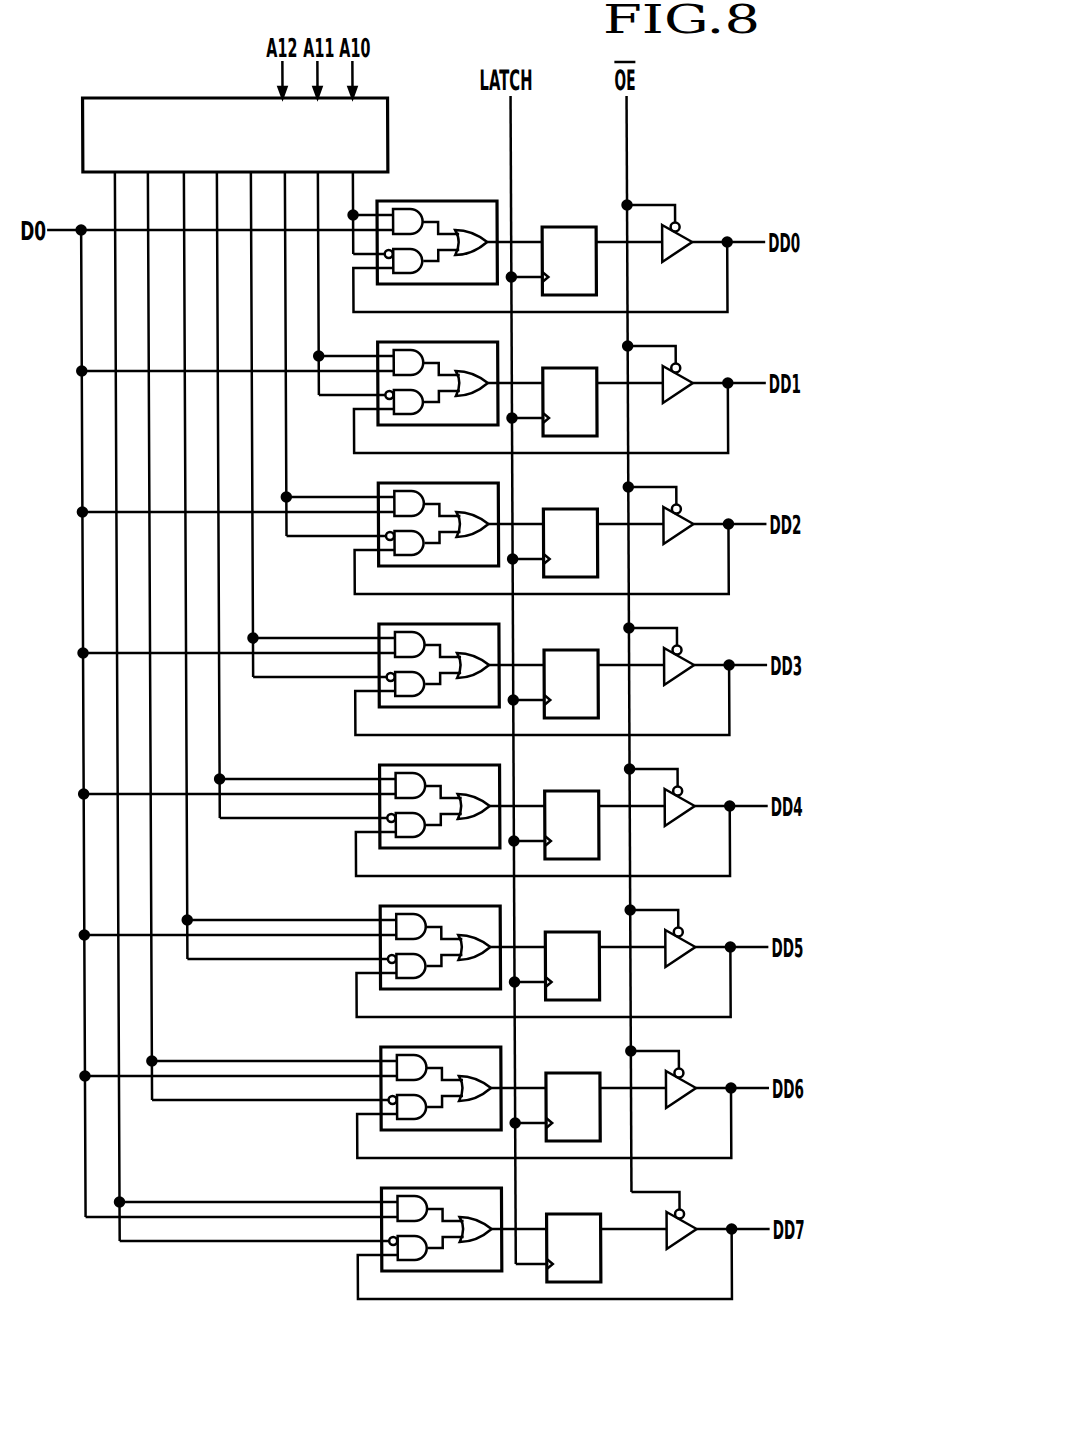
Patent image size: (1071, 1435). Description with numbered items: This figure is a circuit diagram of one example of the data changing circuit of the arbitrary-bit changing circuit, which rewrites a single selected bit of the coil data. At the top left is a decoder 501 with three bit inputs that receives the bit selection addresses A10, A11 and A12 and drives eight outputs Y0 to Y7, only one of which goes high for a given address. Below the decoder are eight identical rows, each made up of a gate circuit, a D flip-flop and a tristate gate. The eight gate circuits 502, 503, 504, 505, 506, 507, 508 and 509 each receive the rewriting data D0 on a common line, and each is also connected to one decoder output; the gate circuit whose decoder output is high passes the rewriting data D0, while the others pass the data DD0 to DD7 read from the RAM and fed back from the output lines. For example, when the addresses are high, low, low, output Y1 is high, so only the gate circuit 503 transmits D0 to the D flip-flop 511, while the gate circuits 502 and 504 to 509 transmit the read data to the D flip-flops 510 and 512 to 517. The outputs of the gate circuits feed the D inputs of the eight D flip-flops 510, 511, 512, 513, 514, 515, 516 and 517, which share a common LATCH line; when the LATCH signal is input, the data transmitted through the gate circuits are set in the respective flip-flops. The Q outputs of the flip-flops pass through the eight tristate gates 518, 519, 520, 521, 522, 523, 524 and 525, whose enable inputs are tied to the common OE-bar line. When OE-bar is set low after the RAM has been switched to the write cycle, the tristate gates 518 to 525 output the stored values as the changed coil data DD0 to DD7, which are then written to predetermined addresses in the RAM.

The decoder 501 is at (112, 97).
The gate circuit 502 is at (460, 199).
The gate circuit 503 is at (414, 373).
The gate circuit 504 is at (414, 514).
The gate circuit 505 is at (415, 655).
The gate circuit 506 is at (415, 796).
The gate circuit 507 is at (416, 937).
The gate circuit 508 is at (417, 1078).
The gate circuit 509 is at (417, 1219).
The D flip-flop 510 is at (570, 227).
The D flip-flop 511 is at (577, 380).
The D flip-flop 512 is at (577, 521).
The D flip-flop 513 is at (578, 662).
The D flip-flop 514 is at (578, 803).
The D flip-flop 515 is at (579, 944).
The D flip-flop 516 is at (580, 1085).
The D flip-flop 517 is at (580, 1226).
The tristate gate 518 is at (678, 252).
The tristate gate 519 is at (665, 394).
The tristate gate 520 is at (666, 536).
The tristate gate 521 is at (666, 677).
The tristate gate 522 is at (667, 818).
The tristate gate 523 is at (668, 959).
The tristate gate 524 is at (668, 1100).
The tristate gate 525 is at (670, 1242).